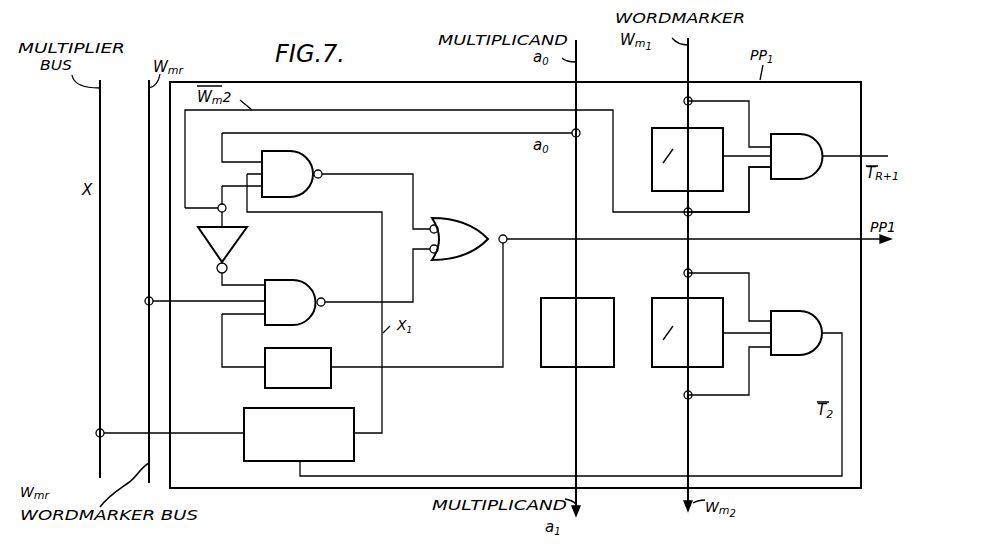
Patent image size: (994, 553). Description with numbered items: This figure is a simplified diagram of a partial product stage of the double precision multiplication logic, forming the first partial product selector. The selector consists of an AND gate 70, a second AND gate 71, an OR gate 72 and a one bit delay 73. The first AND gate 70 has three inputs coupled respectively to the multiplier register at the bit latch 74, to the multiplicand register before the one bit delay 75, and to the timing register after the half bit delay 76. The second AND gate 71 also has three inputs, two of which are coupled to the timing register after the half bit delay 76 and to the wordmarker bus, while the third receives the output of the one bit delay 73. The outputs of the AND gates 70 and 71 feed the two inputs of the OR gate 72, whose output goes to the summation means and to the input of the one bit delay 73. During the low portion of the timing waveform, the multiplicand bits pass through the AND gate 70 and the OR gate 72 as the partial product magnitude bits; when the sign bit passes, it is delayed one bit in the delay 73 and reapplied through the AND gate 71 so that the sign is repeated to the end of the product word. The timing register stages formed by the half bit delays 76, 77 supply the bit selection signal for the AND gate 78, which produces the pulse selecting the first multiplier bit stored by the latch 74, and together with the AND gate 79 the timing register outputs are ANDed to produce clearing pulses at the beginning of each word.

The AND gate 70 is at (312, 152).
The AND gate 71 is at (298, 280).
The OR gate 72 is at (466, 218).
The one bit delay 73 is at (325, 346).
The bit latch 74 is at (244, 420).
The 1 bit delay 75 is at (548, 371).
The half bit delay 76 is at (662, 127).
The timing register stage 77 is at (657, 372).
The AND gate 78 is at (793, 311).
The AND gate 79 is at (797, 134).